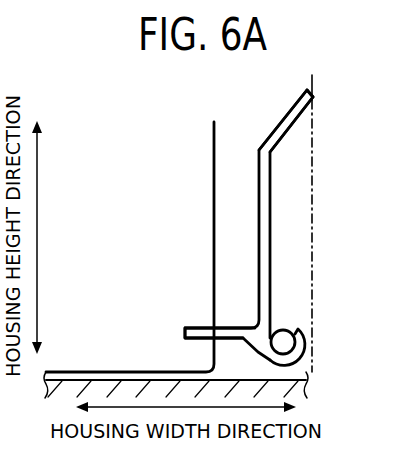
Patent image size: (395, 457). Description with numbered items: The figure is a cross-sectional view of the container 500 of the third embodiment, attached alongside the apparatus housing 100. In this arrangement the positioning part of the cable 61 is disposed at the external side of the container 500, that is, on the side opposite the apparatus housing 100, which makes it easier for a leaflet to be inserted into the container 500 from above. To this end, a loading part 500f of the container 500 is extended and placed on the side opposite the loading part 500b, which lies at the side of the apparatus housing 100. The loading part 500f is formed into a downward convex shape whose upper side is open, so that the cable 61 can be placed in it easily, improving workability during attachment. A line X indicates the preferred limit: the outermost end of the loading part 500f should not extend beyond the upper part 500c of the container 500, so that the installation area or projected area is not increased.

The apparatus housing 100 is at (213, 122).
The container 500 is at (260, 227).
The loading part 500b is at (203, 330).
The upper part 500c is at (275, 128).
The loading part 500f is at (306, 338).
The cable 61 is at (283, 330).
The line X is at (315, 78).